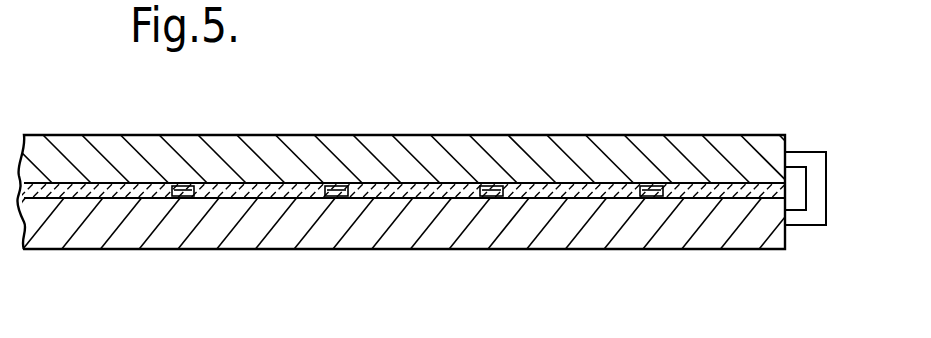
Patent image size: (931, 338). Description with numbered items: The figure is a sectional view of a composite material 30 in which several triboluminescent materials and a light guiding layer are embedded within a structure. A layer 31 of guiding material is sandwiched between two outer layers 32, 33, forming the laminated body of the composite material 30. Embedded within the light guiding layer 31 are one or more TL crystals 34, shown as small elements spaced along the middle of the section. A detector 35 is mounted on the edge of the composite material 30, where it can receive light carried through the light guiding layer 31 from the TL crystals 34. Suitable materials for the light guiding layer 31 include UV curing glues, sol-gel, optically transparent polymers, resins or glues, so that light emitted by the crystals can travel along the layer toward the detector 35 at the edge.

The composite material 30 is at (171, 136).
The light guiding layer 31 is at (387, 185).
The layer 32 is at (280, 137).
The layer 33 is at (397, 233).
The TL crystals 34 is at (187, 196).
The detector 35 is at (813, 160).